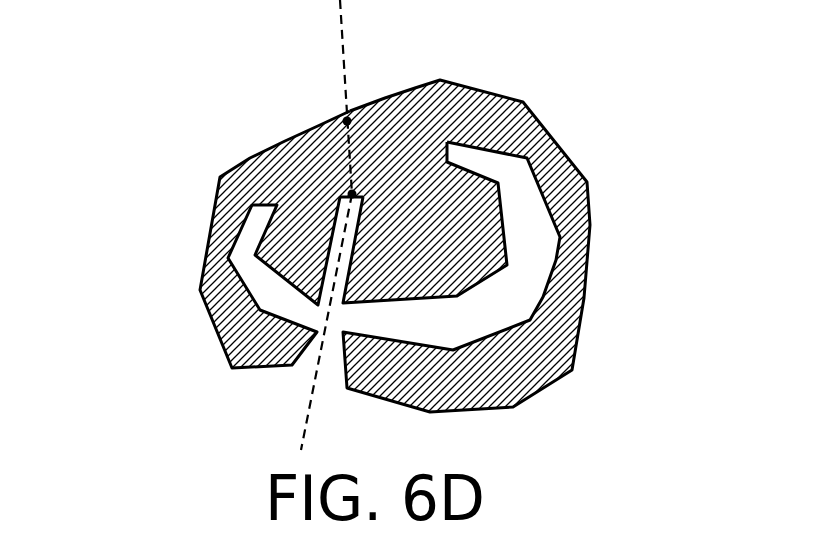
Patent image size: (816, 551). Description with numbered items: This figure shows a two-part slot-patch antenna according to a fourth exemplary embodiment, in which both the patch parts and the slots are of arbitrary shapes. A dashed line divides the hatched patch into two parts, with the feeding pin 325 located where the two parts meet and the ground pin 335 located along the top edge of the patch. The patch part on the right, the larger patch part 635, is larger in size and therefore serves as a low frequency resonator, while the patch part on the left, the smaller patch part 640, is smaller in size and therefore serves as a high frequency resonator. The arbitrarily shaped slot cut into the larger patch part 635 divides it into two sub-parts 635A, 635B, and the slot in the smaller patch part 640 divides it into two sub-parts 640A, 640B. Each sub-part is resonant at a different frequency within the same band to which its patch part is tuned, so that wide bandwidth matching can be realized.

The feeding pin 325 is at (352, 194).
The ground pin 335 is at (348, 120).
The larger patch part 635 is at (583, 123).
The sub-part of larger patch part 635A is at (587, 210).
The sub-part of larger patch part 635B is at (418, 305).
The smaller patch part 640 is at (250, 101).
The sub-part of smaller patch part 640A is at (212, 216).
The sub-part of smaller patch part 640B is at (286, 254).